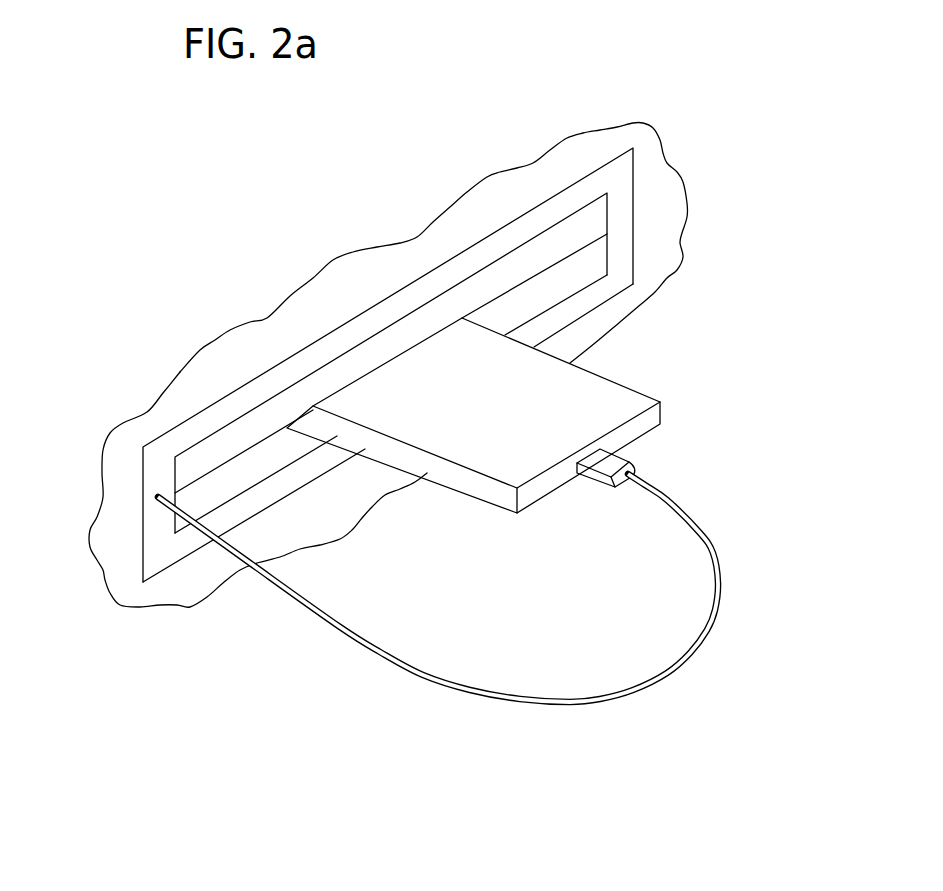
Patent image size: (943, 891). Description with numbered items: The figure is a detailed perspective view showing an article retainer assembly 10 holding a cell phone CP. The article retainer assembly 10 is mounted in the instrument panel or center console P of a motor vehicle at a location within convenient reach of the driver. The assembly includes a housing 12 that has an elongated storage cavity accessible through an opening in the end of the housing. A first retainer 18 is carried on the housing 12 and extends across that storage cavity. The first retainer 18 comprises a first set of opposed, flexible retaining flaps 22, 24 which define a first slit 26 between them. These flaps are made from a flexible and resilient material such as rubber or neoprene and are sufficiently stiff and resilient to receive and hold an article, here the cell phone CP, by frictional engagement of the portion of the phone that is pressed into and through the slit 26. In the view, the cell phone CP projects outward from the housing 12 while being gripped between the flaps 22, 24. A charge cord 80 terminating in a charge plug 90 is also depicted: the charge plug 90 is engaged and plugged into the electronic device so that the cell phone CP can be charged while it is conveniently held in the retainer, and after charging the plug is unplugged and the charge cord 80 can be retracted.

The article retainer assembly 10 is at (205, 287).
The instrument panel or center console P is at (195, 393).
The housing 12 is at (155, 533).
The first retainer 18 is at (244, 529).
The flexible retaining flap 22 is at (512, 273).
The flexible retaining flap 24 is at (570, 278).
The first slit 26 is at (473, 315).
The cell phone CP is at (473, 487).
The charge plug 90 is at (593, 484).
The charge cord 80 is at (421, 678).